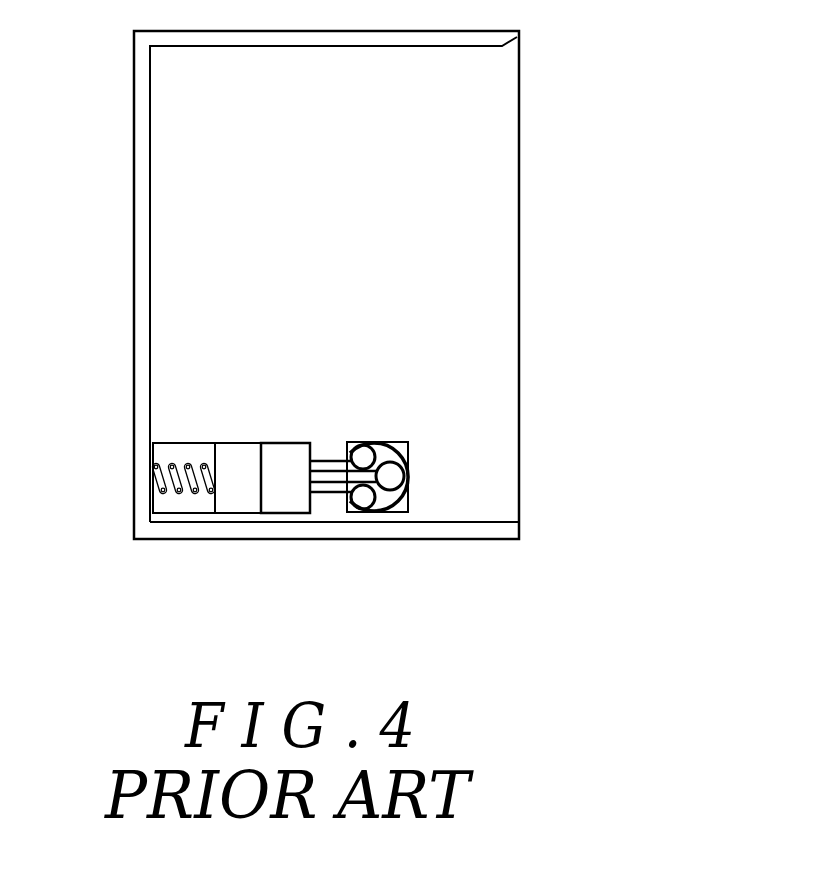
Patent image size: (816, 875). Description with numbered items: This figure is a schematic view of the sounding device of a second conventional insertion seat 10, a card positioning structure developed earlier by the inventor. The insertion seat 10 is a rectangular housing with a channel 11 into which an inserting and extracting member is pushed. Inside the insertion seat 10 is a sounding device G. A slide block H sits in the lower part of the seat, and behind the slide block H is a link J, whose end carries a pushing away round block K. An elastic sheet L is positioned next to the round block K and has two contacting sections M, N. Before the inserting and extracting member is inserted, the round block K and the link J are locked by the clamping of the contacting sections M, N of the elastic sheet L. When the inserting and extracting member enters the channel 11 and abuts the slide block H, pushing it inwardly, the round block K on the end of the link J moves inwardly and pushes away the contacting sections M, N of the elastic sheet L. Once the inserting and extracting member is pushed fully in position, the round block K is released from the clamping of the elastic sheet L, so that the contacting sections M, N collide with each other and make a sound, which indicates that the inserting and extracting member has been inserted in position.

The insertion seat 10 is at (145, 195).
The channel 11 is at (458, 110).
The sounding device G is at (392, 425).
The link J is at (328, 477).
The contacting section M is at (365, 463).
The contacting section N is at (364, 490).
The elastic sheet L is at (413, 448).
The slide block H is at (237, 490).
The pushing away round block K is at (390, 488).